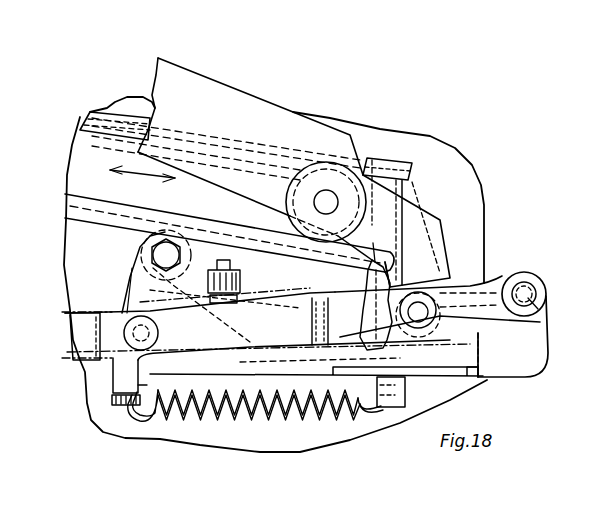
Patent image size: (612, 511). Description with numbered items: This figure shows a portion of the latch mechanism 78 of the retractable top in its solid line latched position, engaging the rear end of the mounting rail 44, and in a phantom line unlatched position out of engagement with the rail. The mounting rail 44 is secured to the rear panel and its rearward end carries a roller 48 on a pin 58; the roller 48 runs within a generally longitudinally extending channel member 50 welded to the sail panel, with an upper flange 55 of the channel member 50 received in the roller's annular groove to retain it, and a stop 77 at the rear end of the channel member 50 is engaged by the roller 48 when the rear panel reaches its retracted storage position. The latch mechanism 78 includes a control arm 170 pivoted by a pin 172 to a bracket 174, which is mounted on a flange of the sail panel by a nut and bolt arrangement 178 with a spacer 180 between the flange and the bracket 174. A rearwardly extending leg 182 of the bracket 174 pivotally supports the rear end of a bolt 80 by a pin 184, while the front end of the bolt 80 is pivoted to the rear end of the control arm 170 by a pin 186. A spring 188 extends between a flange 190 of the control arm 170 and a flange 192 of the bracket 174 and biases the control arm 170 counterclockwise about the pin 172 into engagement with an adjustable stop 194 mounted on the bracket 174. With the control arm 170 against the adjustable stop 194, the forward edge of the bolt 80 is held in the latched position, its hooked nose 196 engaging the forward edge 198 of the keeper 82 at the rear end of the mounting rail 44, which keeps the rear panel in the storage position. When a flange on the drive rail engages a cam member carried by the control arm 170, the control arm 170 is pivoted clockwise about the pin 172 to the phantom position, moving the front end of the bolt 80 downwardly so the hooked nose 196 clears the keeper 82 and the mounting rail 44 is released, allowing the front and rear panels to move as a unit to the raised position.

The mounting rail 44 is at (200, 100).
The roller 48 is at (367, 177).
The channel member 50 is at (101, 113).
The upper flange 55 is at (400, 180).
The pin 58 is at (320, 195).
The stop 77 is at (410, 185).
The latch mechanism 78 is at (530, 270).
The bolt 80 is at (400, 337).
The keeper 82 is at (447, 280).
The control arm 170 is at (110, 320).
The pin 172 is at (150, 334).
The bracket 174 is at (247, 257).
The nut and bolt arrangement 178 is at (167, 250).
The spacer 180 is at (250, 263).
The leg 182 is at (537, 355).
The pin 184 is at (528, 298).
The pin 186 is at (440, 330).
The spring 188 is at (223, 417).
The flange 190 is at (125, 405).
The flange 192 is at (410, 392).
The adjustable stop 194 is at (208, 299).
The hooked nose 196 is at (378, 243).
The forward edge 198 is at (442, 218).